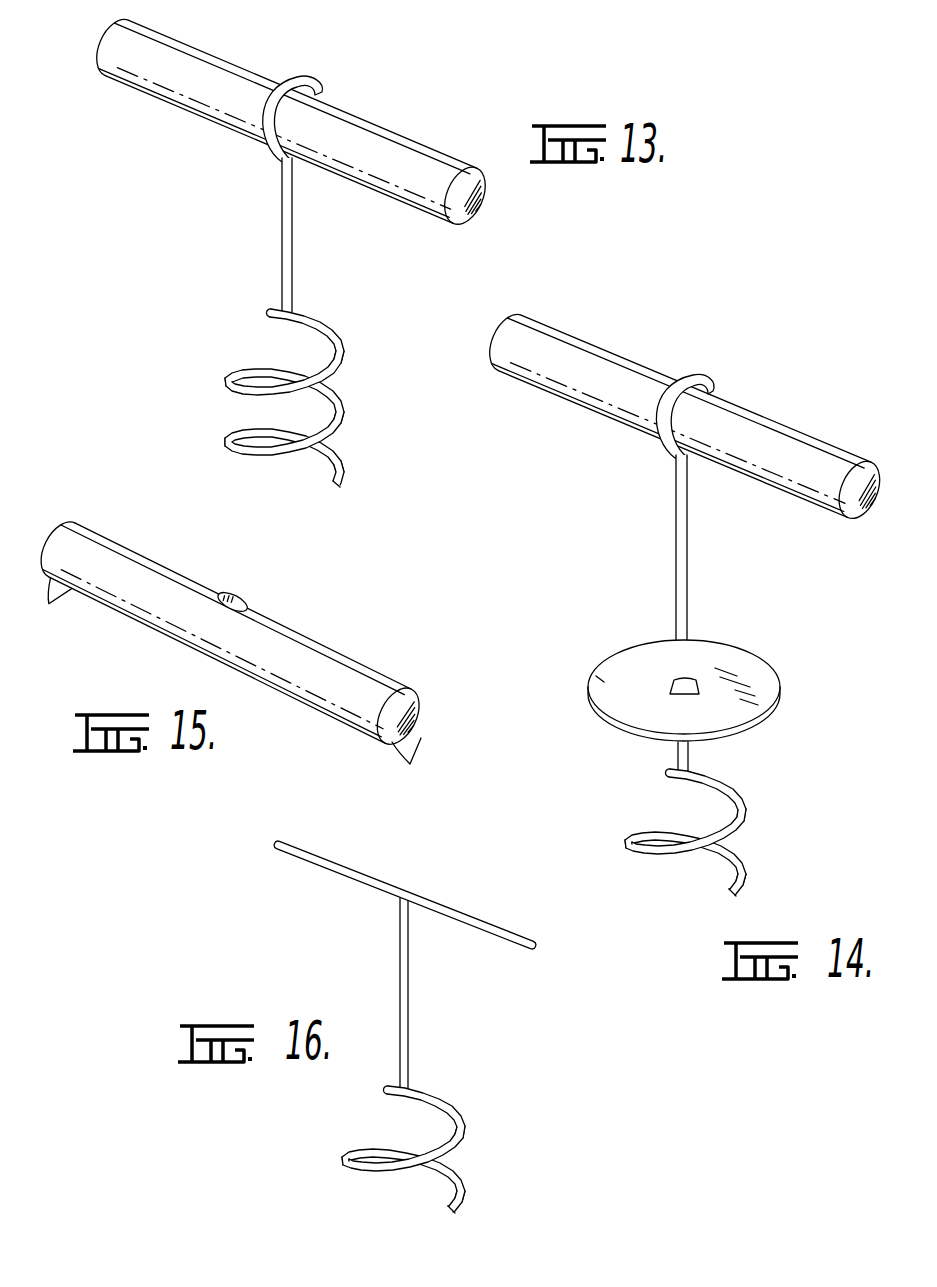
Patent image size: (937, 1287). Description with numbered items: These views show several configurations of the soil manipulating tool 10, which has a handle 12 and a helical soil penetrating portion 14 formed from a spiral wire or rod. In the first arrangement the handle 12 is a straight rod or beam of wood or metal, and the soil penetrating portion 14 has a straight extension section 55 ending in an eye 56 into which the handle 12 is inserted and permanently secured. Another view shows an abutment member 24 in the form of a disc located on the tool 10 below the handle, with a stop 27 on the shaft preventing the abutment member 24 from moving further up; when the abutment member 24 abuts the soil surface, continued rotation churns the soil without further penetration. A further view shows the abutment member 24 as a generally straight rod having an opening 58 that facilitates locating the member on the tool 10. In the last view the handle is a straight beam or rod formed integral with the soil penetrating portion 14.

In FIG. 13, the soil manipulating tool 10 is at (291, 250).
In FIG. 13, the handle 12 is at (411, 148).
In FIG. 14, the handle 12 is at (599, 372).
In FIG. 16, the handle 12 is at (447, 907).
In FIG. 13, the soil penetrating portion 14 is at (343, 346).
In FIG. 14, the soil penetrating portion 14 is at (752, 812).
In FIG. 16, the soil penetrating portion 14 is at (463, 1123).
In FIG. 14, the abutment member 24 is at (741, 665).
In FIG. 15, the abutment member 24 is at (242, 610).
In FIG. 14, the stop 27 is at (670, 686).
In FIG. 13, the straight extension section 55 is at (282, 244).
In FIG. 14, the straight extension section 55 is at (677, 503).
In FIG. 16, the straight extension section 55 is at (404, 992).
In FIG. 13, the eye 56 is at (265, 150).
In FIG. 14, the eye 56 is at (680, 385).
In FIG. 15, the opening 58 is at (237, 603).